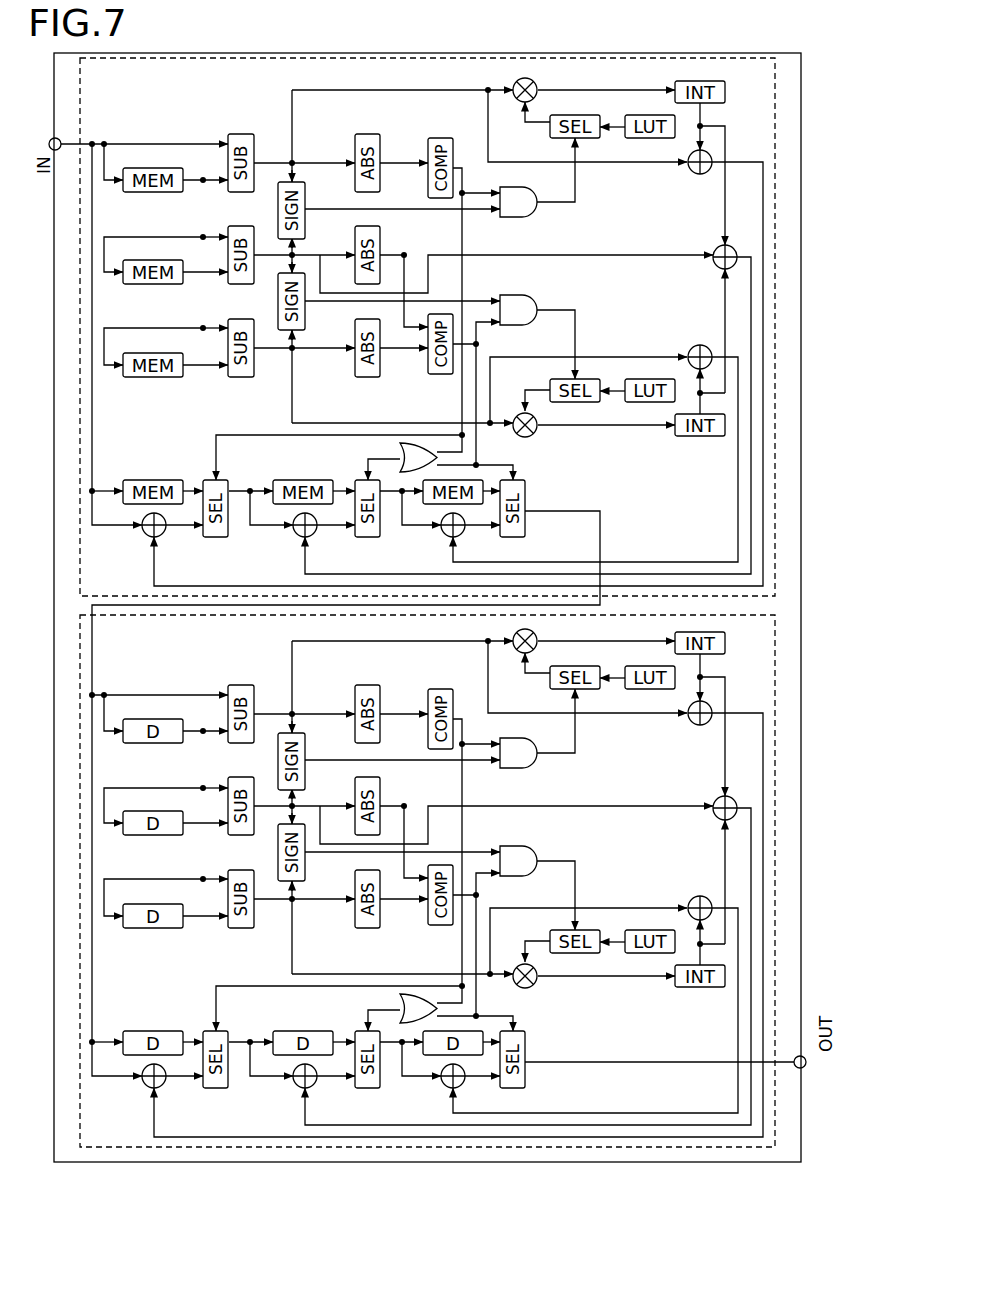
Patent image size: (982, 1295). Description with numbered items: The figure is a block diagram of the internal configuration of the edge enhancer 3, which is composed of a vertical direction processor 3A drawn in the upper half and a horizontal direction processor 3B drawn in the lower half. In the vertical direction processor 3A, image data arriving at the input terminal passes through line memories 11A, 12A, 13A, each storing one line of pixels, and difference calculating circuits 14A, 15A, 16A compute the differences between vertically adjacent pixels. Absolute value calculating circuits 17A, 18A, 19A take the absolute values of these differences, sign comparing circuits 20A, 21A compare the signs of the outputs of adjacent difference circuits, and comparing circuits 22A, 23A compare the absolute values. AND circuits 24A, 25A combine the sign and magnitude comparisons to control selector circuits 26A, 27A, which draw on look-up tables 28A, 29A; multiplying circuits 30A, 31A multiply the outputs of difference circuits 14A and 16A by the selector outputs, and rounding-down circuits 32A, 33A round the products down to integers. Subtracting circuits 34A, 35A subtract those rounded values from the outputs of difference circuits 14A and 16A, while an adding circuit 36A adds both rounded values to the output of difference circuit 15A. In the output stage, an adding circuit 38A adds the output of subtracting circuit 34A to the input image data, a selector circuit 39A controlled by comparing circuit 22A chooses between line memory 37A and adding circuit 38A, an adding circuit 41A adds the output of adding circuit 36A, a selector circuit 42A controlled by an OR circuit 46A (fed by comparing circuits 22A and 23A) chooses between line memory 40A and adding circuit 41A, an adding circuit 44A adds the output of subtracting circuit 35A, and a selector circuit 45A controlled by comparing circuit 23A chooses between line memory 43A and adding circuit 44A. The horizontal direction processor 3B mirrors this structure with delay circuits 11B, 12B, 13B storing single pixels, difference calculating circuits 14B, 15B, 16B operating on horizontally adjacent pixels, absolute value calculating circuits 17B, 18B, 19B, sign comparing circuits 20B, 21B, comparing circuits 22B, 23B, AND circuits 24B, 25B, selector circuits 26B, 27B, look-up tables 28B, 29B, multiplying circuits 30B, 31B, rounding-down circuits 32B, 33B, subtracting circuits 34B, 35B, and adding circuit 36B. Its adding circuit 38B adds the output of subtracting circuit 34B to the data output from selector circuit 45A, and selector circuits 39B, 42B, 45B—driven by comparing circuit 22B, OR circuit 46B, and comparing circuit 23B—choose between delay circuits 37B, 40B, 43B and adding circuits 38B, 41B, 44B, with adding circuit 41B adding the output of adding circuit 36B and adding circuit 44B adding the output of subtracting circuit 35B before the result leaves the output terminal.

The edge enhancer 3 is at (801, 607).
The vertical direction processor 3A is at (776, 517).
The horizontal direction processor 3B is at (776, 672).
The line memory 11A is at (150, 193).
The line memory 12A is at (150, 285).
The line memory 13A is at (150, 378).
The difference calculating circuit 14A is at (240, 193).
The difference calculating circuit 15A is at (240, 285).
The difference calculating circuit 16A is at (240, 378).
The absolute value calculating circuit 17A is at (353, 160).
The absolute value calculating circuit 18A is at (353, 254).
The absolute value calculating circuit 19A is at (353, 353).
The sign comparing circuit 20A is at (332, 193).
The sign comparing circuit 21A is at (307, 311).
The comparing circuit 22A is at (440, 139).
The comparing circuit 23A is at (437, 374).
The AND circuit 24A is at (509, 189).
The AND circuit 25A is at (520, 325).
The selector circuit 26A is at (550, 134).
The selector circuit 27A is at (549, 379).
The look-up table 28A is at (640, 139).
The look-up table 29A is at (640, 378).
The multiplying circuit 30A is at (533, 82).
The multiplying circuit 31A is at (533, 433).
The rounding-down circuit 32A is at (673, 84).
The rounding-down circuit 33A is at (673, 438).
The subtracting circuit 34A is at (689, 165).
The subtracting circuit 35A is at (691, 350).
The adding circuit 36A is at (714, 266).
The line memory 37A is at (155, 480).
The adding circuit 38A is at (144, 532).
The selector circuit 39A is at (230, 526).
The line memory 40A is at (298, 480).
The adding circuit 41A is at (311, 534).
The selector circuit 42A is at (380, 524).
The line memory 43A is at (484, 482).
The adding circuit 44A is at (456, 534).
The selector circuit 45A is at (526, 525).
The OR circuit 46A is at (400, 451).
The delay circuit 11B is at (152, 748).
The delay circuit 12B is at (152, 840).
The delay circuit 13B is at (152, 932).
The difference calculating circuit 14B is at (231, 731).
The difference calculating circuit 15B is at (231, 823).
The difference calculating circuit 16B is at (231, 915).
The absolute value calculating circuit 17B is at (347, 710).
The absolute value calculating circuit 18B is at (347, 804).
The absolute value calculating circuit 19B is at (347, 906).
The sign comparing circuit 20B is at (314, 757).
The sign comparing circuit 21B is at (314, 858).
The comparing circuit 22B is at (428, 706).
The comparing circuit 23B is at (428, 911).
The AND circuit 24B is at (507, 741).
The AND circuit 25B is at (510, 879).
The selector circuit 26B is at (552, 686).
The selector circuit 27B is at (552, 934).
The look-up table 28B is at (631, 689).
The look-up table 29B is at (630, 932).
The multiplying circuit 30B is at (548, 636).
The multiplying circuit 31B is at (548, 983).
The rounding-down circuit 32B is at (673, 636).
The rounding-down circuit 33B is at (673, 986).
The subtracting circuit 34B is at (683, 727).
The subtracting circuit 35B is at (683, 895).
The adding circuit 36B is at (708, 824).
The delay circuit 37B is at (151, 1027).
The adding circuit 38B is at (131, 1084).
The selector circuit 39B is at (241, 1066).
The delay circuit 40B is at (300, 1028).
The adding circuit 41B is at (325, 1085).
The selector circuit 42B is at (393, 1066).
The delay circuit 43B is at (497, 1030).
The adding circuit 44B is at (472, 1085).
The selector circuit 45B is at (537, 1066).
The OR circuit 46B is at (393, 1005).